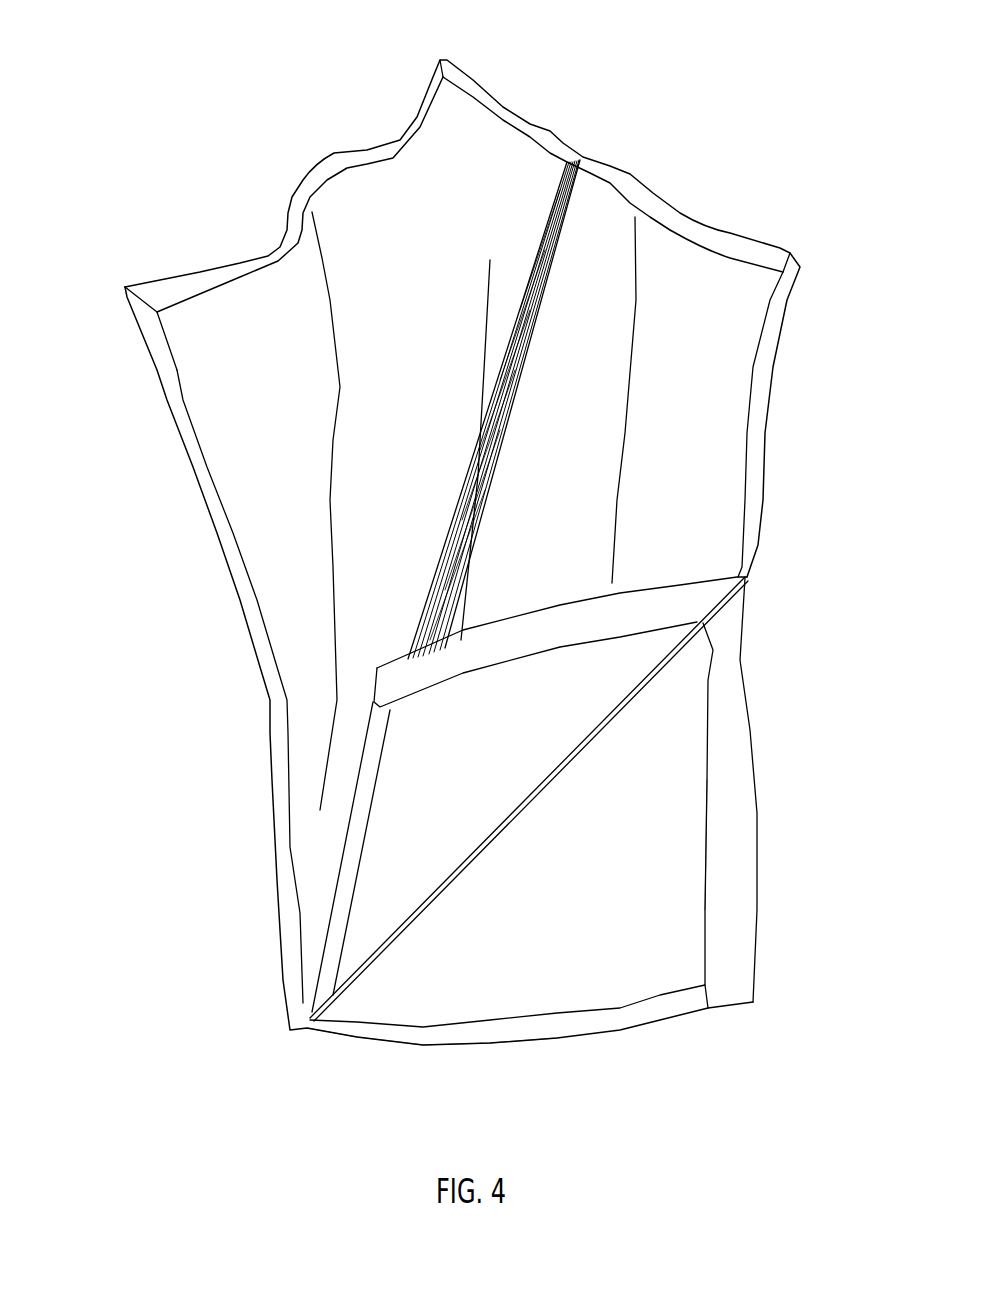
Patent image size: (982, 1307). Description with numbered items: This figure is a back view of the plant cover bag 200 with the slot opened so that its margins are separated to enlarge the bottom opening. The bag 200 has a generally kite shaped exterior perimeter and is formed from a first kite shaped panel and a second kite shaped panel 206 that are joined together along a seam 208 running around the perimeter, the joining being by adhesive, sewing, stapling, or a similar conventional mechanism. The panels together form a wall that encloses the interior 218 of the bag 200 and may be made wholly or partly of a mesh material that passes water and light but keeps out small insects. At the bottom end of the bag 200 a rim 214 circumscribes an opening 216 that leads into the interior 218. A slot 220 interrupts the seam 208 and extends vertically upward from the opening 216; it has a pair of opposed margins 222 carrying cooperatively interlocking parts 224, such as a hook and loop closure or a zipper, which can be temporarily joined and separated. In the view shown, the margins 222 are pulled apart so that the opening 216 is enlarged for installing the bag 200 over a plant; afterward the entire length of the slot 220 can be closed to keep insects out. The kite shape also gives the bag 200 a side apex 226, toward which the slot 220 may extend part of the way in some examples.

The bag 200 is at (705, 170).
The second kite shaped panel 206 is at (442, 498).
The seam 208 is at (334, 153).
The rim 214 is at (353, 831).
The opening 216 is at (541, 965).
The interior 218 is at (605, 766).
The slot 220 is at (792, 770).
The margins 222 is at (620, 592).
The interlocking parts 224 is at (442, 60).
The side apex 226 is at (125, 287).